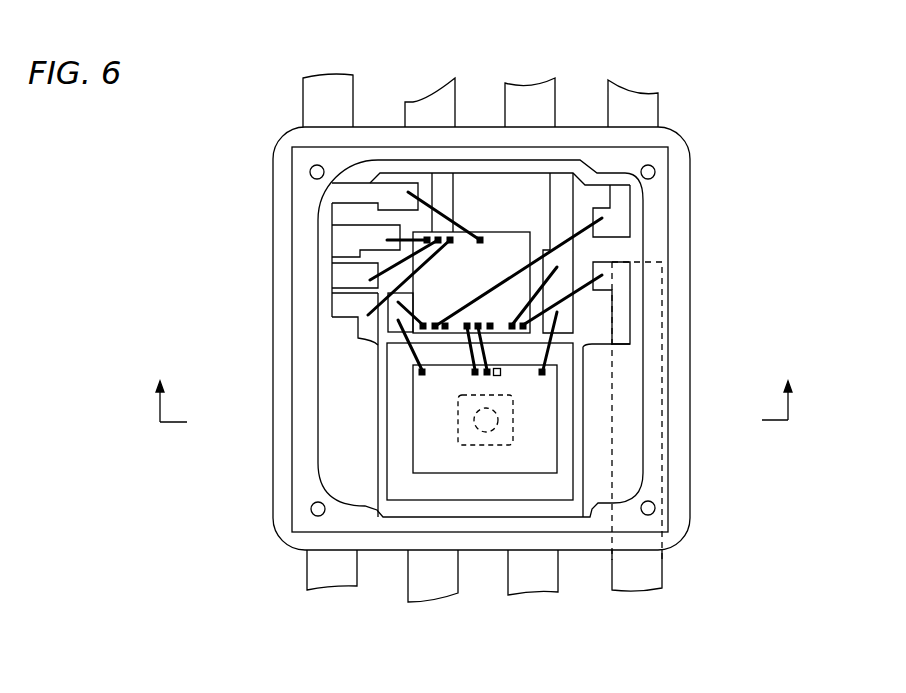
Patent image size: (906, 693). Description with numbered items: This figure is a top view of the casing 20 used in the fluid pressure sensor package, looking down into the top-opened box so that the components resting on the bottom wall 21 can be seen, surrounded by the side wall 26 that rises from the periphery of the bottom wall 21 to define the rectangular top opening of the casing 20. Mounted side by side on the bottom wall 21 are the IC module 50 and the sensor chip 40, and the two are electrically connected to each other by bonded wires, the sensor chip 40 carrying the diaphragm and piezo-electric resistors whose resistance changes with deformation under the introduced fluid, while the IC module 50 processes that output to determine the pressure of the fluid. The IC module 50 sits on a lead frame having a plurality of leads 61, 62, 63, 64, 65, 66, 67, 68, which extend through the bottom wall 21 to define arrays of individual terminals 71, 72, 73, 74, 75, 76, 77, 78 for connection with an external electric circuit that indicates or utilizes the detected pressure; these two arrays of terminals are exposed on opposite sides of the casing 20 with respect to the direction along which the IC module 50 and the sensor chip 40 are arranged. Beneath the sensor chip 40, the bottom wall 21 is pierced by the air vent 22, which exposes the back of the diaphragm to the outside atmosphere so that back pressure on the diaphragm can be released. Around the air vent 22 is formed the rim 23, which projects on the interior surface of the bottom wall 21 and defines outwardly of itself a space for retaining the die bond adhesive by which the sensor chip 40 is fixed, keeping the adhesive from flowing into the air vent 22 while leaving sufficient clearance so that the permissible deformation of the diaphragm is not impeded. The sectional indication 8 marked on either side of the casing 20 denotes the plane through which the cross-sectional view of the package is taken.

The section line 8- 8 is at (475, 383).
The casing 20 is at (687, 146).
The bottom wall 21 is at (637, 435).
The air vent 22 is at (492, 422).
The rim 23 is at (508, 437).
The side wall 26 is at (678, 342).
The sensor chip 40 is at (410, 402).
The IC module 50 is at (506, 250).
The lead 61 is at (345, 233).
The lead 62 is at (340, 278).
The lead 63 is at (355, 321).
The lead 64 is at (622, 302).
The lead 65 is at (358, 190).
The lead 66 is at (447, 193).
The lead 67 is at (563, 182).
The lead 68 is at (622, 215).
The terminal 71 is at (332, 580).
The terminal 72 is at (432, 582).
The terminal 73 is at (538, 582).
The terminal 74 is at (645, 582).
The terminal 75 is at (313, 83).
The terminal 76 is at (415, 100).
The terminal 77 is at (537, 82).
The terminal 78 is at (633, 97).